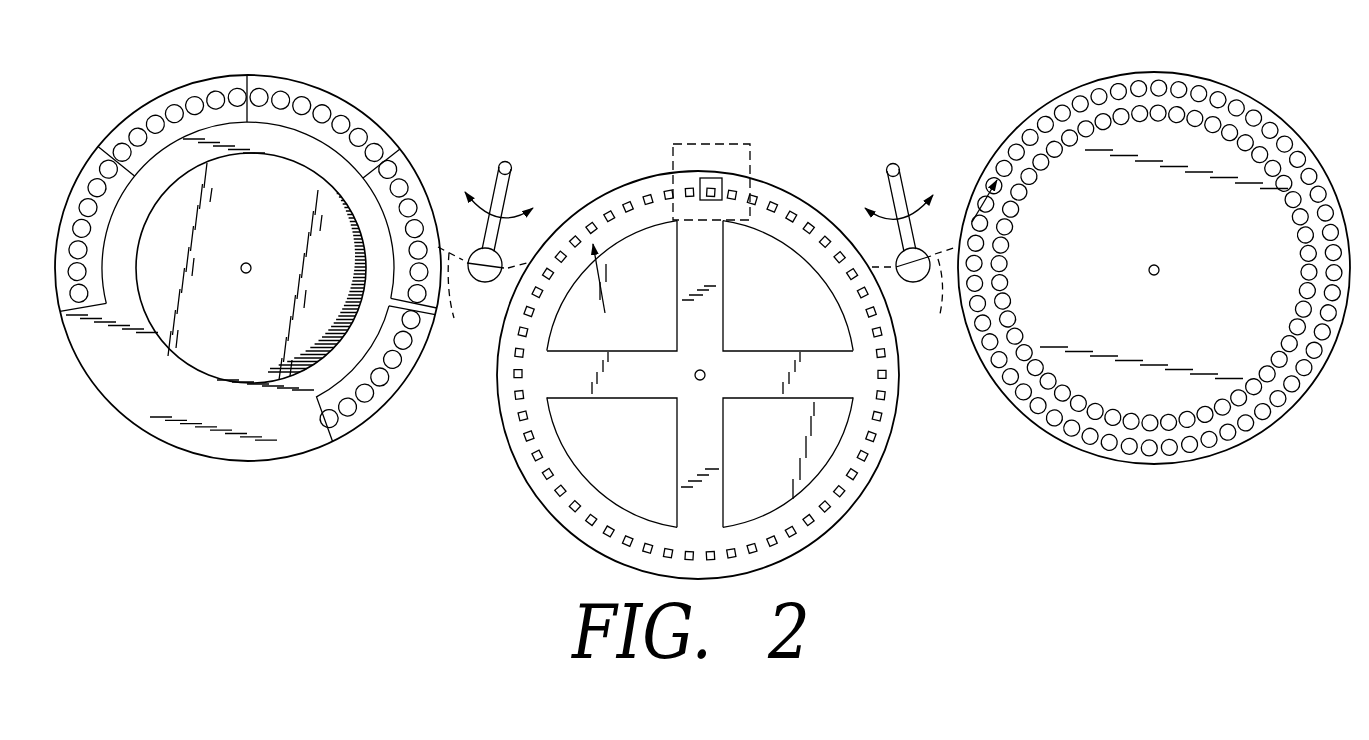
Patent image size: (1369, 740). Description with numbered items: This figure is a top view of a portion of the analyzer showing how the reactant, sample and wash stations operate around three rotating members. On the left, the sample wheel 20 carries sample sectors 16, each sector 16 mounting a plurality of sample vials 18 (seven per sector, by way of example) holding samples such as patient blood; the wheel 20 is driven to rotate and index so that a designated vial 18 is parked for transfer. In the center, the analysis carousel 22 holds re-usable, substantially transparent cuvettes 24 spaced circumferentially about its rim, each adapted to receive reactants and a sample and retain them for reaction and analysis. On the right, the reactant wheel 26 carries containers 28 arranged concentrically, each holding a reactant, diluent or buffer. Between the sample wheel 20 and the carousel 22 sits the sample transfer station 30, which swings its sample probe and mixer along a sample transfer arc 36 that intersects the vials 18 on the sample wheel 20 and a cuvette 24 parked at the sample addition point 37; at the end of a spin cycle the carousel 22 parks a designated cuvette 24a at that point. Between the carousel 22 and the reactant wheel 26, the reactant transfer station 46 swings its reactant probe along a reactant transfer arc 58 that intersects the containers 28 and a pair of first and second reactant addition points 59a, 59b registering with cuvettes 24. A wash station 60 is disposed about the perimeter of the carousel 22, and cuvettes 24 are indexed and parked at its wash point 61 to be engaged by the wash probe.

The sample sector 16 is at (383, 393).
The sample vial 18 is at (403, 189).
The sample wheel 20 is at (216, 336).
The analysis carousel 22 is at (614, 462).
The cuvette 24 is at (514, 421).
The designated cuvette 24a is at (594, 232).
The reactant wheel 26 is at (1173, 320).
The container 28 is at (1258, 147).
The sample transfer station 30 is at (522, 159).
The sample transfer arc 36 is at (484, 296).
The sample addition point 37 is at (603, 293).
The reactant transfer station 46 is at (902, 152).
The reactant transfer arc 58 is at (914, 297).
The first reactant addition point 59a is at (804, 232).
The second reactant addition point 59b is at (835, 258).
The wash station 60 is at (721, 134).
The wash point 61 is at (727, 174).